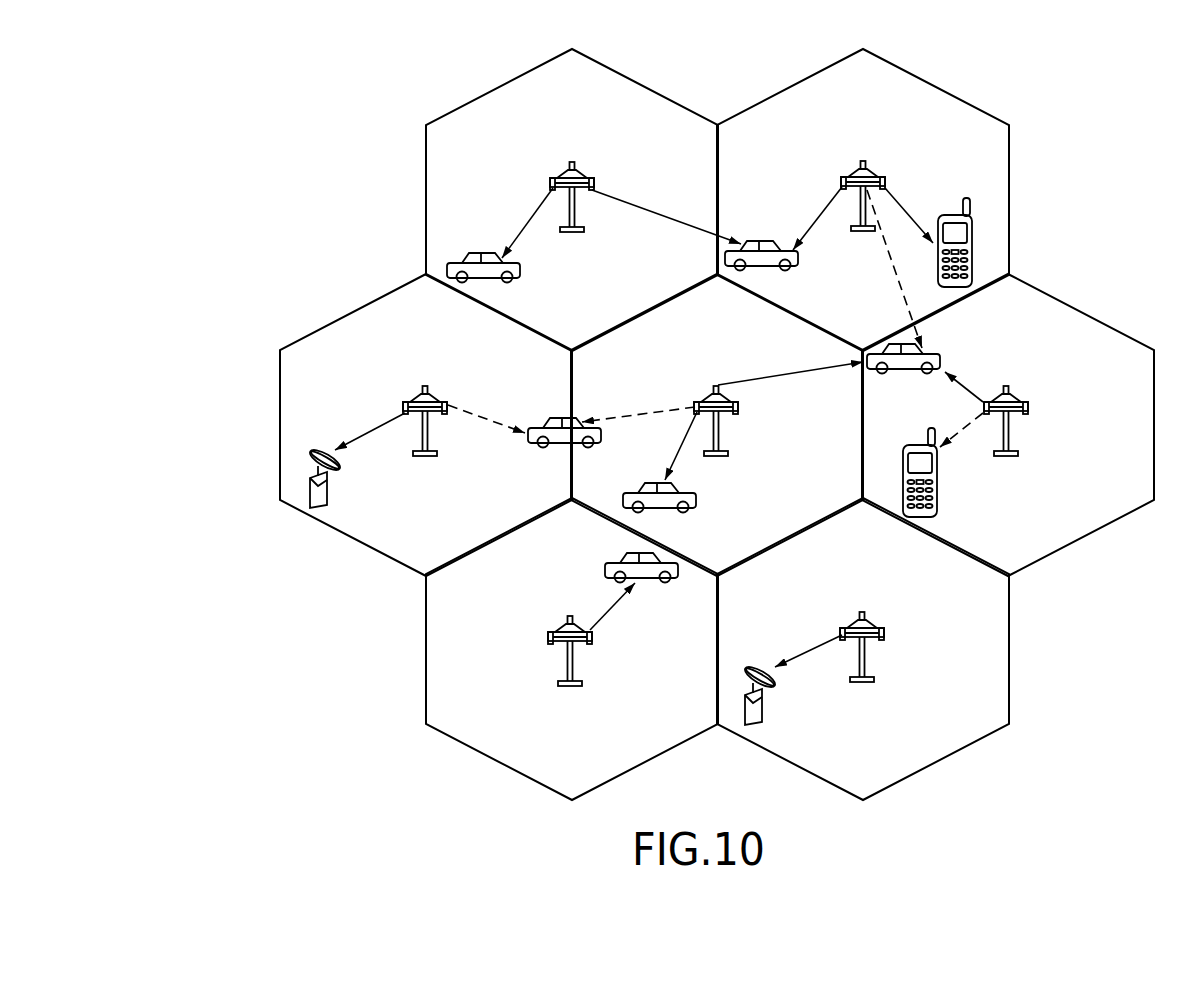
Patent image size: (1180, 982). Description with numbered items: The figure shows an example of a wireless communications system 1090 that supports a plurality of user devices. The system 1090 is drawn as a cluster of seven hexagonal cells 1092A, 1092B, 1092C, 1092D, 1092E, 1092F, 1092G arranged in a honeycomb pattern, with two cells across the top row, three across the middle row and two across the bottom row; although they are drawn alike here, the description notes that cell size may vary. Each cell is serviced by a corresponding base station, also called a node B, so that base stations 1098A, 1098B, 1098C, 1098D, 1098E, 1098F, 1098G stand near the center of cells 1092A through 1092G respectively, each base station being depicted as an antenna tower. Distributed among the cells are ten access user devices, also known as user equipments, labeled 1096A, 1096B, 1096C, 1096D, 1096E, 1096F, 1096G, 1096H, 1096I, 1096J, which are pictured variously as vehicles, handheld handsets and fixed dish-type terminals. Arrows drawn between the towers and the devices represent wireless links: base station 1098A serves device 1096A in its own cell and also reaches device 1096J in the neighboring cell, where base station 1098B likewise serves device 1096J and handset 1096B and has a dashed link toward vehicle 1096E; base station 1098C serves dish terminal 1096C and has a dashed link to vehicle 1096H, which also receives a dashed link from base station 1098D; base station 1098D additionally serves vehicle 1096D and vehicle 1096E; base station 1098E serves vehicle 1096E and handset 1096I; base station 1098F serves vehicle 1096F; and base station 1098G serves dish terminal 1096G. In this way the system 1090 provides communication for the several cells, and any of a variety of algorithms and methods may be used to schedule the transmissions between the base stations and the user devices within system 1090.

The wireless communications system 1090 is at (216, 134).
The cell 1092A is at (603, 96).
The cell 1092B is at (893, 96).
The cell 1092C is at (460, 326).
The cell 1092D is at (747, 326).
The cell 1092E is at (1042, 326).
The cell 1092F is at (597, 548).
The cell 1092G is at (892, 546).
The base station 1098A is at (571, 162).
The base station 1098B is at (862, 161).
The base station 1098C is at (424, 386).
The base station 1098D is at (715, 386).
The base station 1098E is at (1005, 386).
The base station 1098F is at (569, 616).
The base station 1098G is at (861, 612).
The access user device 1096A is at (520, 278).
The access user device 1096B is at (950, 215).
The access user device 1096C is at (328, 493).
The access user device 1096D is at (700, 505).
The access user device 1096E is at (902, 376).
The access user device 1096F is at (678, 578).
The access user device 1096G is at (765, 713).
The access user device 1096H is at (533, 447).
The access user device 1096I is at (940, 500).
The access user device 1096J is at (762, 245).